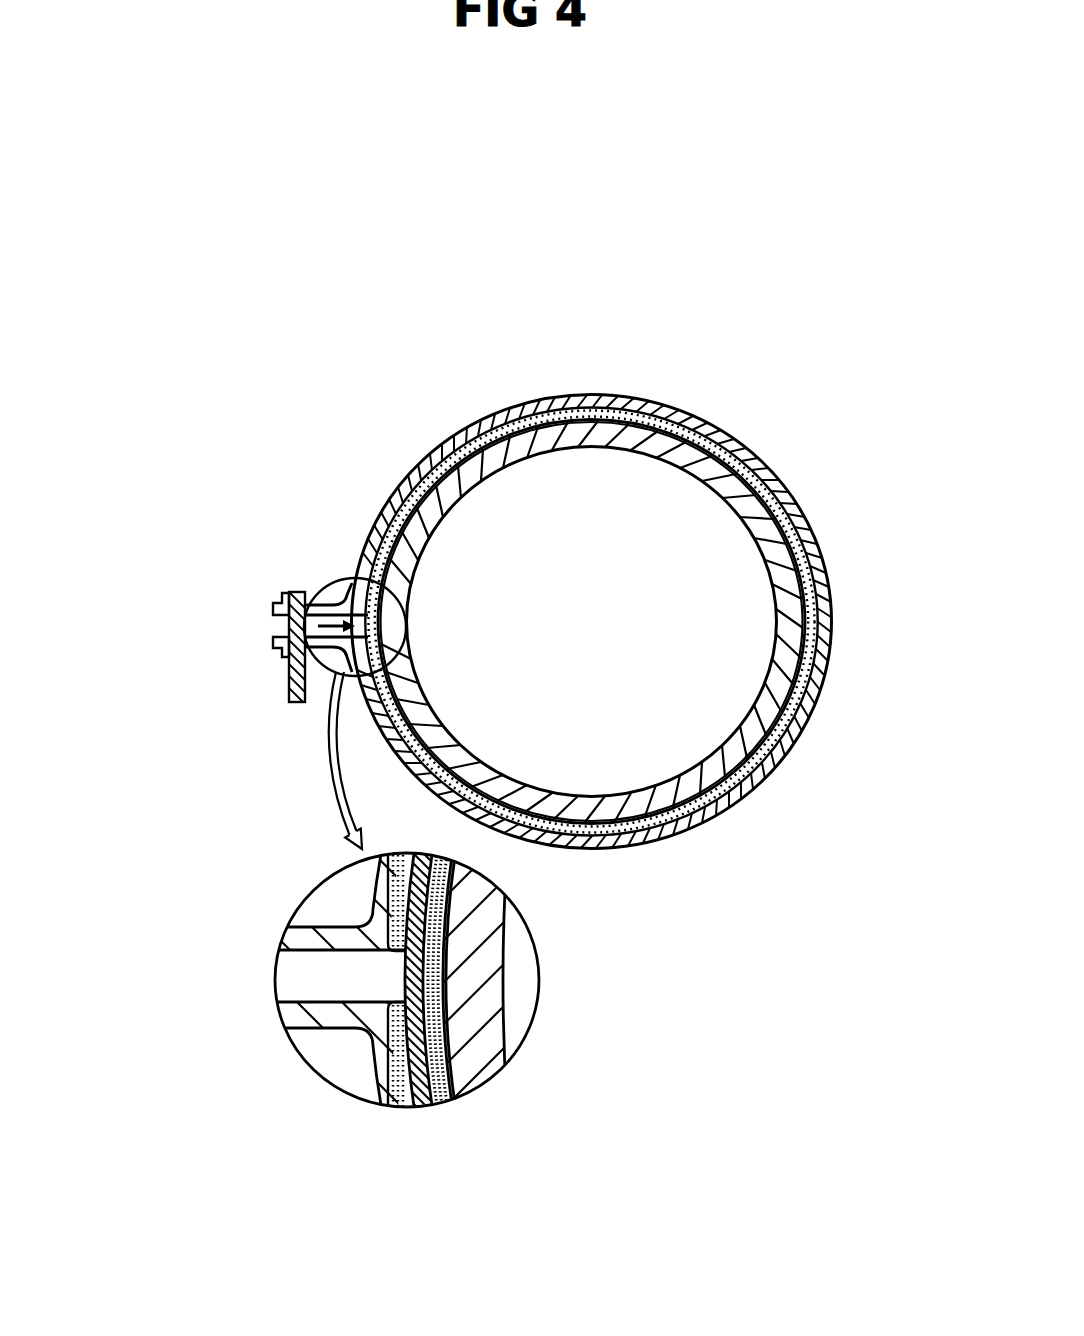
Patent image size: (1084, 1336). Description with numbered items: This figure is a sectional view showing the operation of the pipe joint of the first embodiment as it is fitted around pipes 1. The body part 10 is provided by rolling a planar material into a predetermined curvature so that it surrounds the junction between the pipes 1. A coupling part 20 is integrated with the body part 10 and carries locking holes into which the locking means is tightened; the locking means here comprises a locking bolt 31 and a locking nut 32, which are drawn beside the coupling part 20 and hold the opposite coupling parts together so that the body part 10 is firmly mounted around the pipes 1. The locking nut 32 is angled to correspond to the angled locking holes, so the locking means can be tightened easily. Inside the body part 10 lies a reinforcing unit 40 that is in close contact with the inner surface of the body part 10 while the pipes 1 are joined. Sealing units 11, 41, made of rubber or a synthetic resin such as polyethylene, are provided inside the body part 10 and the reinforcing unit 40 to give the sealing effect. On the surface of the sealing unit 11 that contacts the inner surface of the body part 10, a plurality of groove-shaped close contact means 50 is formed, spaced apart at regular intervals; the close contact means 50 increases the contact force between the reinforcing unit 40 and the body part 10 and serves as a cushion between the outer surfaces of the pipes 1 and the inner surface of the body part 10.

The pipes 1 is at (733, 753).
The body part 10 is at (800, 493).
The sealing unit 11 is at (382, 1040).
The coupling part 20 is at (330, 604).
The locking bolt 31 is at (285, 594).
The locking nut 32 is at (276, 652).
The reinforcing unit 40 is at (275, 610).
The sealing unit 41 is at (442, 1022).
The close contact means 50 is at (708, 427).